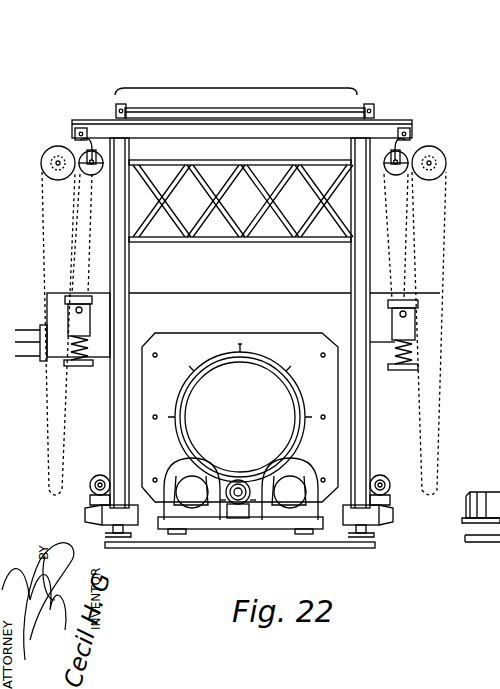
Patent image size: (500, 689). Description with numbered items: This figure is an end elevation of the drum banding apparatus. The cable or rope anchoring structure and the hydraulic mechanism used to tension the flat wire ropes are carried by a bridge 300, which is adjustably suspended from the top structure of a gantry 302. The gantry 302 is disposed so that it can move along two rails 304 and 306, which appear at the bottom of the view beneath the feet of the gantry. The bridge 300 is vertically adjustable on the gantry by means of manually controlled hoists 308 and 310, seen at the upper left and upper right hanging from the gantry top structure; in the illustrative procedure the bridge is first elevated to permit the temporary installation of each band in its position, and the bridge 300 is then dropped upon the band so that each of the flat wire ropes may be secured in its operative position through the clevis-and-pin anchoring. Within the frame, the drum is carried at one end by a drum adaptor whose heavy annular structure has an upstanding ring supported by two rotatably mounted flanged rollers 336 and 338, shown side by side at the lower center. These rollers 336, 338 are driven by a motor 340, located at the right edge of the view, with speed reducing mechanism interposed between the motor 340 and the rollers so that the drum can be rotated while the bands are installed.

The bridge 300 is at (231, 294).
The gantry 302 is at (240, 86).
The rail 304 is at (136, 540).
The rail 306 is at (360, 545).
The manually controlled hoist 308 is at (50, 168).
The manually controlled hoist 310 is at (440, 168).
The flanged roller 336 is at (185, 462).
The flanged roller 338 is at (300, 462).
The motor 340 is at (493, 490).